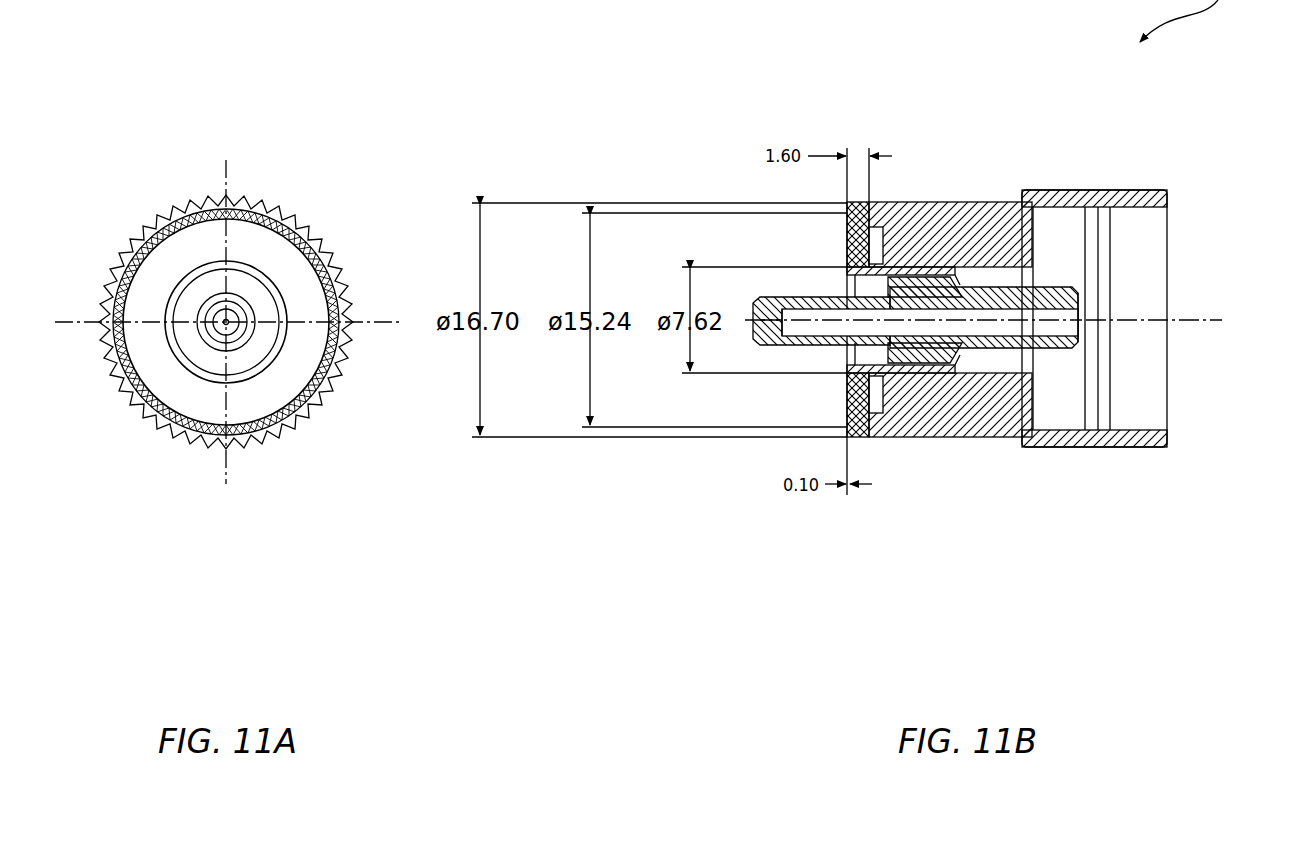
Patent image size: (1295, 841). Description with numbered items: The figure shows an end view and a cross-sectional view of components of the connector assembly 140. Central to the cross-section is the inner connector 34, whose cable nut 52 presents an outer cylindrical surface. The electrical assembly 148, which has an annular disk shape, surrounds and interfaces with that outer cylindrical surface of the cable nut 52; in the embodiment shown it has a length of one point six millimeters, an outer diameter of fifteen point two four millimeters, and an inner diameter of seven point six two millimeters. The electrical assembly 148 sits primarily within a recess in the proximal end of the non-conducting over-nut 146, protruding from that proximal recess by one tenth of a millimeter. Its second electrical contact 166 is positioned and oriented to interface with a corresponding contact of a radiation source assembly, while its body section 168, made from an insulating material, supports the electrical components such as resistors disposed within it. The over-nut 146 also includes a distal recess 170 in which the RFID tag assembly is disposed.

In FIG. 11B, the inner connector 34 is at (787, 283).
In FIG. 11B, the cable nut 52 is at (908, 272).
In FIG. 11B, the connector assembly 140 is at (392, 116).
In FIG. 11B, the non-conducting over-nut 146 is at (1038, 190).
In FIG. 11B, the electrical assembly 148 is at (828, 236).
In FIG. 11A, the second electrical contact 166 is at (285, 395).
In FIG. 11B, the second electrical contact 166 is at (847, 400).
In FIG. 11B, the body section 168 is at (862, 425).
In FIG. 11B, the distal recess 170 is at (1150, 246).